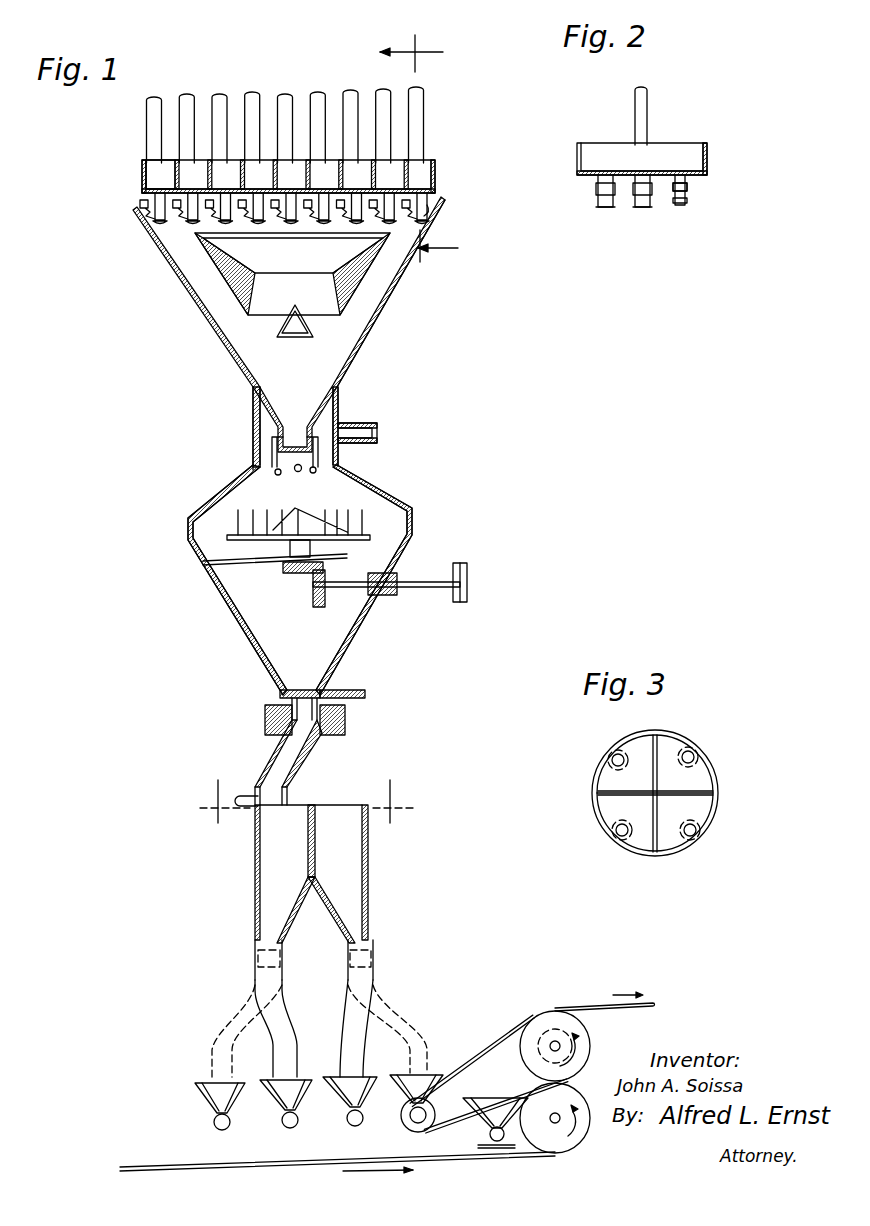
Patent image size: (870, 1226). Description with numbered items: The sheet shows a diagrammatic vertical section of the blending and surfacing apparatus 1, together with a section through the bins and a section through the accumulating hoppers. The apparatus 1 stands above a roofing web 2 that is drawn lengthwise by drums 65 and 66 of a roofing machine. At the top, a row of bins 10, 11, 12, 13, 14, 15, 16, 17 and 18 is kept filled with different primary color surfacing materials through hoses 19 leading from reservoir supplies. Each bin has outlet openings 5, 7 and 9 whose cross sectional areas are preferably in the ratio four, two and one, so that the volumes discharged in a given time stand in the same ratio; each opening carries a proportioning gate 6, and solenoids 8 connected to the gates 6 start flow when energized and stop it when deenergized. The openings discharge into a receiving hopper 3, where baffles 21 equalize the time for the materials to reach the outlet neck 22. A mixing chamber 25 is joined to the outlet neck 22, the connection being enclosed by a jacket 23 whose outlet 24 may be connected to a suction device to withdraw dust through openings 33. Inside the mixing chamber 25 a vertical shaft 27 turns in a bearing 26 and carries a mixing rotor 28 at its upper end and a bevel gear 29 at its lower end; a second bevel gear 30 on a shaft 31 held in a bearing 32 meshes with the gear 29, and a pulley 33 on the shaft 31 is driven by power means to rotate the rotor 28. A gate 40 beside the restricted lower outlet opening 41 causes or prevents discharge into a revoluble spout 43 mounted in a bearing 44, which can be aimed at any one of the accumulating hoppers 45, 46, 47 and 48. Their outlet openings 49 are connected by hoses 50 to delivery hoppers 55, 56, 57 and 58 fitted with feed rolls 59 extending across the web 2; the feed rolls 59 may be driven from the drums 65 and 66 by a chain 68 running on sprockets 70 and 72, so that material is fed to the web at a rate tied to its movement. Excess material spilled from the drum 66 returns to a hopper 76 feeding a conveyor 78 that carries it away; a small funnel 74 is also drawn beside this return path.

In FIG. 1, the apparatus 1 is at (215, 335).
In FIG. 1, the roofing web 2 is at (337, 604).
In FIG. 1, the receiving hopper 3 is at (368, 339).
In FIG. 2, the outlet opening 5 is at (598, 199).
In FIG. 1, the gate 6 is at (152, 232).
In FIG. 2, the gate 6 is at (603, 208).
In FIG. 1, the outlet opening 7 is at (428, 200).
In FIG. 2, the outlet opening 7 is at (640, 204).
In FIG. 1, the solenoid 8 is at (140, 203).
In FIG. 2, the solenoid 8 is at (688, 187).
In FIG. 2, the outlet opening 9 is at (677, 204).
In FIG. 1, the bin 10 is at (428, 160).
In FIG. 2, the bin 10 is at (685, 150).
In FIG. 1, the bin 11 is at (385, 162).
In FIG. 1, the bin 12 is at (336, 162).
In FIG. 1, the bin 13 is at (303, 162).
In FIG. 1, the bin 14 is at (271, 162).
In FIG. 1, the bin 15 is at (239, 162).
In FIG. 1, the bin 16 is at (305, 238).
In FIG. 1, the bin 17 is at (176, 162).
In FIG. 1, the bin 18 is at (146, 165).
In FIG. 1, the hoses 19 is at (222, 97).
In FIG. 2, the hoses 19 is at (647, 100).
In FIG. 1, the baffles 21 is at (243, 253).
In FIG. 1, the outlet neck 22 is at (298, 432).
In FIG. 1, the jacket 23 is at (253, 432).
In FIG. 1, the outlet 24 is at (377, 428).
In FIG. 1, the mixing chamber 25 is at (415, 515).
In FIG. 1, the bearing 26 is at (290, 560).
In FIG. 1, the vertical shaft 27 is at (300, 580).
In FIG. 1, the mixing rotor 28 is at (288, 518).
In FIG. 1, the bevel gear 29 is at (300, 575).
In FIG. 1, the bevel gear 30 is at (318, 600).
In FIG. 1, the shaft 31 is at (355, 584).
In FIG. 1, the bearing 32 is at (385, 576).
In FIG. 1, the pulley 33 is at (303, 474).
In FIG. 1, the gate 40 is at (362, 692).
In FIG. 1, the lower outlet opening 41 is at (280, 695).
In FIG. 1, the revoluble spout 43 is at (265, 754).
In FIG. 1, the bearing 44 is at (345, 715).
In FIG. 3, the accumulating hopper 45 is at (612, 812).
In FIG. 1, the accumulating hopper 46 is at (273, 889).
In FIG. 3, the accumulating hopper 46 is at (608, 780).
In FIG. 1, the accumulating hopper 47 is at (347, 870).
In FIG. 3, the accumulating hopper 47 is at (700, 772).
In FIG. 3, the accumulating hopper 48 is at (700, 806).
In FIG. 1, the outlet openings 49 is at (268, 929).
In FIG. 3, the outlet openings 49 is at (612, 760).
In FIG. 1, the hoses 50 is at (267, 987).
In FIG. 1, the delivery hopper 55 is at (217, 1102).
In FIG. 1, the delivery hopper 56 is at (290, 1100).
In FIG. 1, the delivery hopper 57 is at (350, 1097).
In FIG. 1, the delivery hopper 58 is at (415, 1093).
In FIG. 1, the feed rolls 59 is at (222, 1130).
In FIG. 1, the drum 65 is at (592, 1048).
In FIG. 1, the drum 66 is at (582, 1100).
In FIG. 1, the chain 68 is at (474, 1072).
In FIG. 1, the sprocket 70 is at (545, 1035).
In FIG. 1, the sprocket 72 is at (430, 1110).
In FIG. 1, the funnel 74 is at (487, 1118).
In FIG. 1, the hopper 76 is at (490, 1133).
In FIG. 1, the conveyor 78 is at (478, 1146).